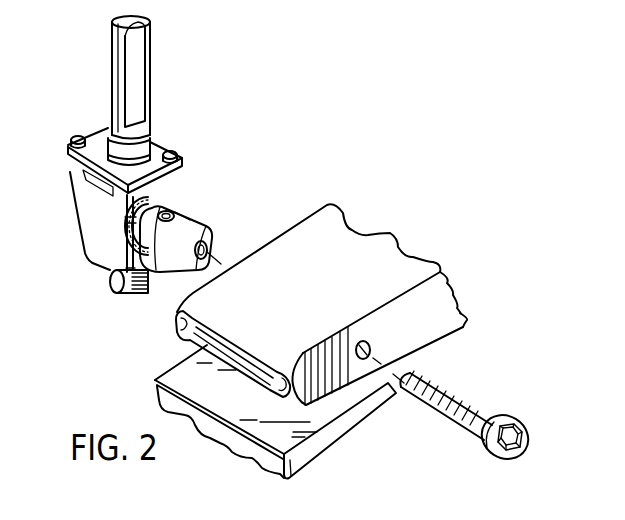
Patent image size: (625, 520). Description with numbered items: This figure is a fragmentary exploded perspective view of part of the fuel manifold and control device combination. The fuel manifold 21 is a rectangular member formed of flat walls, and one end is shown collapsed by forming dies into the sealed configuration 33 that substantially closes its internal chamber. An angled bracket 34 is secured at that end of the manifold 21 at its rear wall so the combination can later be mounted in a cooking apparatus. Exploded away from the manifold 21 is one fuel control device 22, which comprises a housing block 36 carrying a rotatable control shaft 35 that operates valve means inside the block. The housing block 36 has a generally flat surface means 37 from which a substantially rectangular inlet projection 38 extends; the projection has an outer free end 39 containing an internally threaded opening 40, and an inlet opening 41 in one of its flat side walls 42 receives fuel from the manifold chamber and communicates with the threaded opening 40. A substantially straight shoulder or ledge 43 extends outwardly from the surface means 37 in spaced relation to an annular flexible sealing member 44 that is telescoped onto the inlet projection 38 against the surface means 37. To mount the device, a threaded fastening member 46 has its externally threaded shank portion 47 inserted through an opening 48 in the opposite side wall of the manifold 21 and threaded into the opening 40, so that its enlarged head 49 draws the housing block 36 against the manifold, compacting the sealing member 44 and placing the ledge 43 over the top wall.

The fuel manifold 21 is at (390, 234).
The fuel control device 22 is at (185, 134).
The sealed end configuration 33 is at (178, 340).
The angled bracket 34 is at (153, 383).
The control shaft 35 is at (112, 68).
The housing block 36 is at (90, 216).
The flat surface means 37 is at (135, 205).
The inlet projection 38 is at (200, 220).
The outer free end 39 is at (210, 245).
The internally threaded opening 40 is at (210, 248).
The inlet opening 41 is at (182, 227).
The flat side wall 42 is at (197, 226).
The ledge 43 is at (128, 214).
The annular flexible sealing member 44 is at (122, 243).
The threaded fastening member 46 is at (490, 412).
The externally threaded shank portion 47 is at (455, 388).
The opening 48 is at (372, 350).
The enlarged head 49 is at (525, 418).